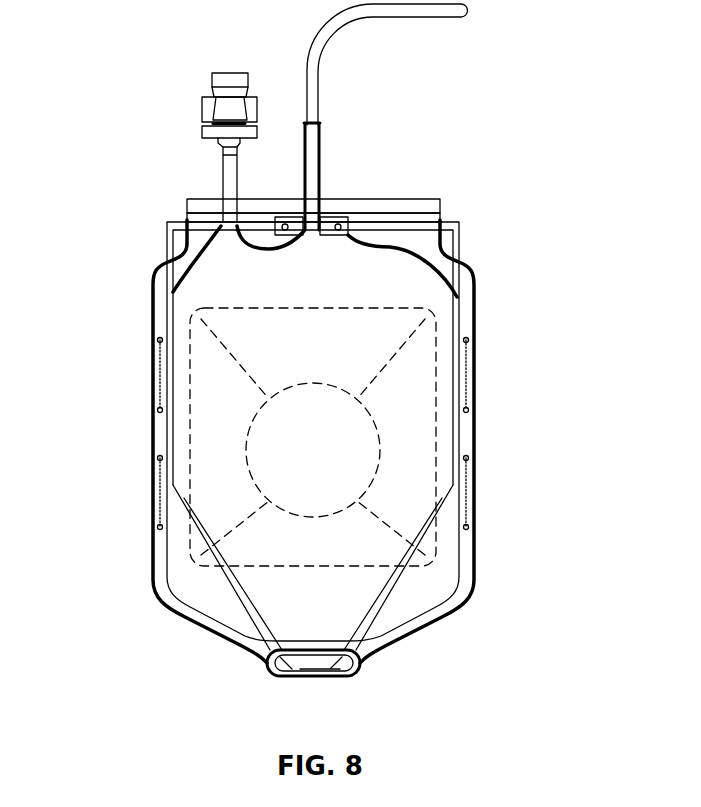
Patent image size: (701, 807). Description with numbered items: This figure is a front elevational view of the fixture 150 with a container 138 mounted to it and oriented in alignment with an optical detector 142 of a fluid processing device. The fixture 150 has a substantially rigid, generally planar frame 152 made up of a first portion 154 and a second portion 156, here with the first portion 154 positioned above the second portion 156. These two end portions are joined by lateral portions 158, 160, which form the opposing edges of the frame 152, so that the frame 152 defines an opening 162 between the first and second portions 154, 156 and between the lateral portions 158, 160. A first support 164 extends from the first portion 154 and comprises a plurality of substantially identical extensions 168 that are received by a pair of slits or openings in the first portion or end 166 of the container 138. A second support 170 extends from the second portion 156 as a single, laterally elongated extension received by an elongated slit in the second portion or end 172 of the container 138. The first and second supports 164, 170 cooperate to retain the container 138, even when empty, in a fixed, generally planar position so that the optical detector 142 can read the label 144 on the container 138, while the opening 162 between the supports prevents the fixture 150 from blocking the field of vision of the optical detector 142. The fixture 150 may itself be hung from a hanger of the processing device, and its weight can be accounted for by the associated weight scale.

The container 138 is at (466, 616).
The optical detector 142 is at (240, 473).
The label 144 is at (273, 570).
The fixture 150 is at (383, 411).
The frame 152 is at (464, 216).
The first portion 154 is at (407, 227).
The second portion 156 is at (307, 689).
The lateral portion 158 is at (167, 430).
The lateral portion 160 is at (459, 428).
The opening 162 is at (377, 590).
The first support 164 is at (348, 205).
The first portion or end 166 is at (203, 210).
The extensions 168 is at (285, 224).
The second support 170 is at (293, 661).
The second portion or end 172 is at (363, 667).